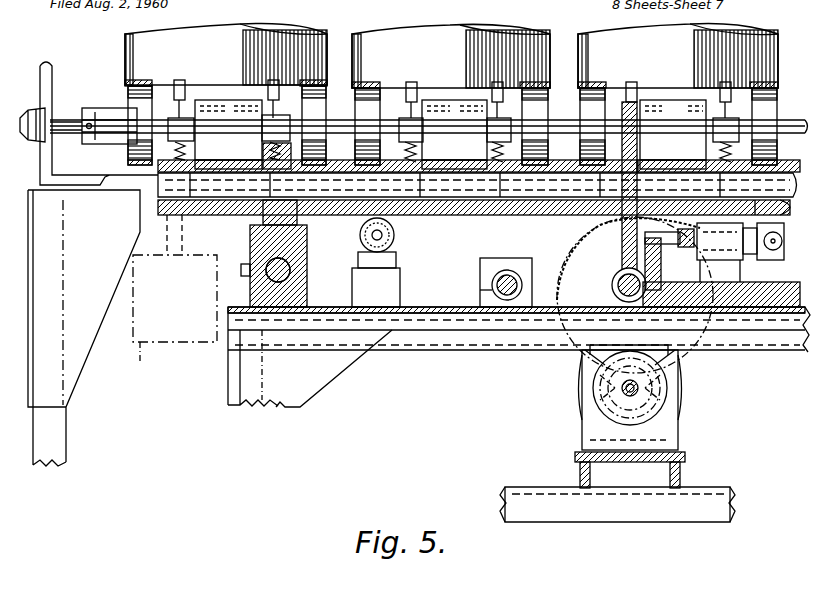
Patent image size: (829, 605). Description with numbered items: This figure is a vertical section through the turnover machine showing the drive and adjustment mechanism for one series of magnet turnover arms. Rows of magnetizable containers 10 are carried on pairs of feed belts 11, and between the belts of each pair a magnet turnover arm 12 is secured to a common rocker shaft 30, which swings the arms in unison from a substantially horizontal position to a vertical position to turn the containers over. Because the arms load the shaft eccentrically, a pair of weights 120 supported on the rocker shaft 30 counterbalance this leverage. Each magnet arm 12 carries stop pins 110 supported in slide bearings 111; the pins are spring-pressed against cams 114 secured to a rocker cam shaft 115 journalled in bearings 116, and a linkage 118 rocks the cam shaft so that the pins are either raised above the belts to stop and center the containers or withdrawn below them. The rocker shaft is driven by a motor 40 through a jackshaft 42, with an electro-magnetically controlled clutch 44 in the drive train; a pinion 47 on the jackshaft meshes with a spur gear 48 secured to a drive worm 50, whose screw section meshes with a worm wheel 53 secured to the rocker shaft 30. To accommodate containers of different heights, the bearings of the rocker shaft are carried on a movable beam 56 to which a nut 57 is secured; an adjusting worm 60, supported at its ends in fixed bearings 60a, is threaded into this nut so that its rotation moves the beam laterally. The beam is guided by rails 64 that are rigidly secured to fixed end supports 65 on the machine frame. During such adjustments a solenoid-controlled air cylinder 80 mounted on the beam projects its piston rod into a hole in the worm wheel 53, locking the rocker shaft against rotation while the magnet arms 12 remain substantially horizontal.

The container 10 is at (125, 47).
The feed belt 11 is at (309, 80).
The magnet turnover arm 12 is at (233, 91).
The stop pin 110 is at (181, 82).
The slide bearing 111 is at (173, 134).
The cam 114 is at (158, 183).
The rocker cam shaft 115 is at (538, 215).
The bearing 116 is at (287, 253).
The linkage 118 is at (360, 235).
The weight 120 is at (138, 360).
The rocker shaft 30 is at (160, 190).
The motor 40 is at (680, 391).
The jackshaft 42 is at (663, 420).
The electro-magnetically controlled clutch 44 is at (686, 403).
The pinion 47 is at (588, 408).
The spur gear 48 is at (625, 298).
The drive worm 50 is at (629, 301).
The worm wheel 53 is at (637, 120).
The movable beam 56 is at (445, 340).
The nut 57 is at (490, 262).
The adjusting worm 60 is at (498, 284).
The fixed bearing 60a is at (480, 296).
The rail 64 is at (232, 348).
The fixed end support 65 is at (262, 292).
The solenoid-controlled air cylinder 80 is at (614, 262).